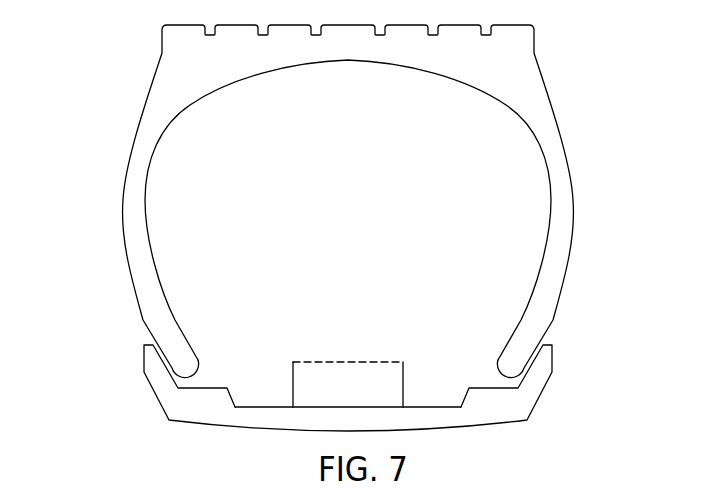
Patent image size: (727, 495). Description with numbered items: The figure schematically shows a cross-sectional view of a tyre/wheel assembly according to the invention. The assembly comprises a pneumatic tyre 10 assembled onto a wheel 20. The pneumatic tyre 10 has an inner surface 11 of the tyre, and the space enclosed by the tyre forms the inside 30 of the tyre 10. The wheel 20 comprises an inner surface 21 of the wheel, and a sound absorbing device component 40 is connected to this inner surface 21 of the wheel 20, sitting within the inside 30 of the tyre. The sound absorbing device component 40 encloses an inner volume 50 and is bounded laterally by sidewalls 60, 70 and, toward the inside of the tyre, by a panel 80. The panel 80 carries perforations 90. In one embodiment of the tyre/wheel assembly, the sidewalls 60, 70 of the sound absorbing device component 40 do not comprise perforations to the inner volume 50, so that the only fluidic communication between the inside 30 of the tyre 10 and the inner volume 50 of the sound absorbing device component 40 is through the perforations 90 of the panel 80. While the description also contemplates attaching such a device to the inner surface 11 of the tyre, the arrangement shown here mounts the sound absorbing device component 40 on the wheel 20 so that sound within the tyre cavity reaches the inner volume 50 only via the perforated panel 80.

The pneumatic tyre 10 is at (550, 270).
The inner surface of the tyre 11 is at (198, 93).
The wheel 20 is at (173, 402).
The inner surface of the wheel 21 is at (273, 405).
The inside of the tyre 30 is at (407, 210).
The sound absorbing device component 40 is at (313, 352).
The inner volume of the sound absorbing device component 50 is at (382, 383).
The sidewall 60 is at (403, 398).
The sidewall 70 is at (293, 387).
The panel 80 is at (387, 362).
The perforations 90 is at (335, 362).